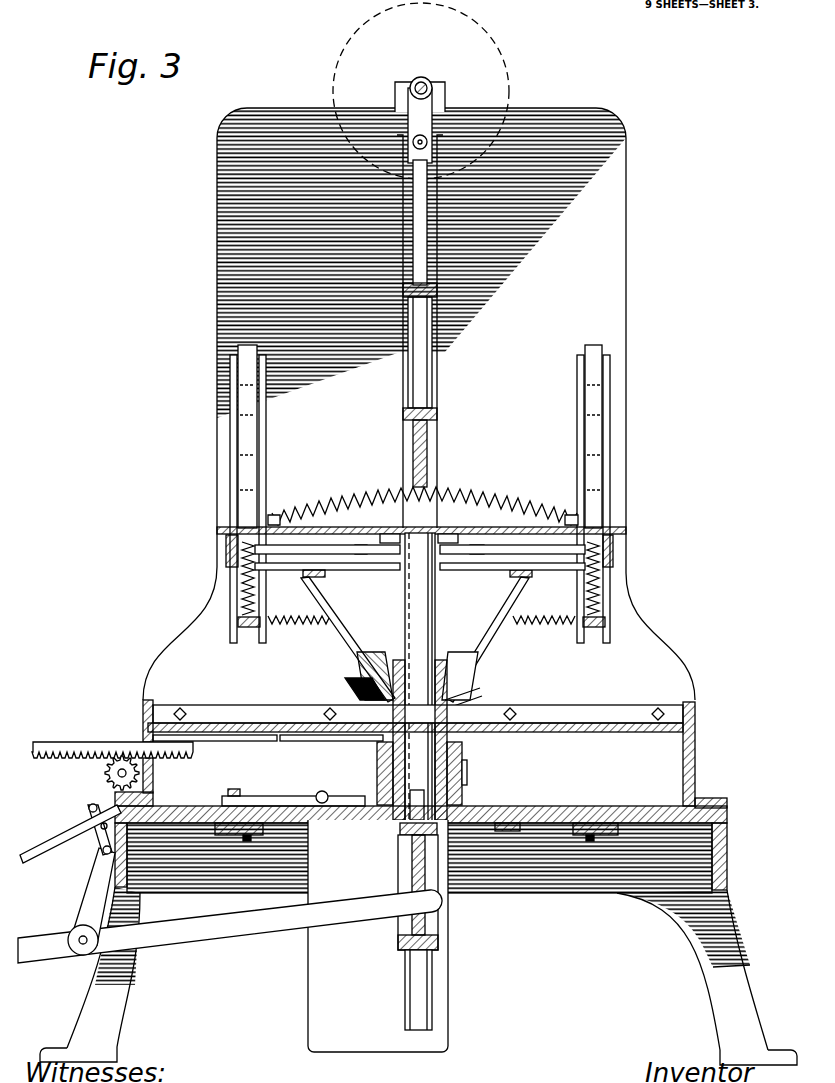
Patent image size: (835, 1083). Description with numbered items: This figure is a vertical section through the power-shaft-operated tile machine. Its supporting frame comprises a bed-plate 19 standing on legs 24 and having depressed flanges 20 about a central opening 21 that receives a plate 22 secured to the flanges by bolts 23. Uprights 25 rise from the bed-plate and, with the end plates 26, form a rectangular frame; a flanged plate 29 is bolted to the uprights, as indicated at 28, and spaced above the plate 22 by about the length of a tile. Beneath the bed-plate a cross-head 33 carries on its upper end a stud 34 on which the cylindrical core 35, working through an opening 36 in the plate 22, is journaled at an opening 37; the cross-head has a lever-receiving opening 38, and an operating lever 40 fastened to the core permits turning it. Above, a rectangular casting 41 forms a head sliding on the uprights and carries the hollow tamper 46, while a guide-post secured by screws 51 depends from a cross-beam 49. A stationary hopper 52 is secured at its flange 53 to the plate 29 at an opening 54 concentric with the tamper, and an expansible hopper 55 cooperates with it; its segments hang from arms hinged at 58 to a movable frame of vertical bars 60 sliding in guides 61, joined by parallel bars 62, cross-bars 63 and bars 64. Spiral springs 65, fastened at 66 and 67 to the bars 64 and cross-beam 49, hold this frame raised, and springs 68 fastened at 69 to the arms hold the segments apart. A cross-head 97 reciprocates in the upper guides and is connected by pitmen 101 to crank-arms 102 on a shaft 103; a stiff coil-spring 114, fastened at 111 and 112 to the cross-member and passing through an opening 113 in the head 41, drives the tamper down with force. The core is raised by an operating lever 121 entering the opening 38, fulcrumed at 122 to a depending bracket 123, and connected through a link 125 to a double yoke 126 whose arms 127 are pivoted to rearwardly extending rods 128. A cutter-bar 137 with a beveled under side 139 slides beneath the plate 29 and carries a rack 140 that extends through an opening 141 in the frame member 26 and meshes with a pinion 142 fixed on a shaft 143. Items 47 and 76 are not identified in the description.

The bed-plate 19 is at (185, 806).
The depressed flanges 20 is at (215, 835).
The central opening 21 is at (238, 806).
The plate 22 is at (345, 825).
The bolts 23 is at (250, 840).
The legs 24 is at (110, 1030).
The uprights 25 is at (419, 351).
The end plates 26 is at (128, 793).
The bolts 28 is at (186, 710).
The flanged plate 29 is at (415, 705).
The cross-head 33 is at (438, 880).
The stud 34 is at (465, 796).
The core 35 is at (462, 758).
The opening 36 is at (511, 835).
The opening 37 is at (467, 780).
The lever-receiving opening 38 is at (438, 920).
The operating lever 40 is at (470, 845).
The casting 41 is at (427, 440).
The tamper 46 is at (446, 660).
The shaft 47 is at (432, 622).
The cross-beam 49 is at (537, 515).
The screws 51 is at (410, 560).
The stationary hopper 52 is at (355, 688).
The flange 53 is at (462, 728).
The opening 54 is at (455, 725).
The expansible hopper 55 is at (365, 655).
The hinge 58 is at (245, 578).
The vertical bars 60 is at (245, 453).
The guides 61 is at (262, 378).
The parallel bars 62 is at (358, 565).
The cross-bars 63 is at (360, 545).
The bars 64 is at (250, 628).
The spiral springs 65 is at (245, 587).
The spring fastening 66 is at (243, 613).
The spring fastening 67 is at (228, 533).
The springs 68 is at (540, 615).
The spring fastening 69 is at (330, 622).
The stop 76 is at (572, 620).
The cross-head 97 is at (438, 292).
The pitmen 101 is at (425, 230).
The crank-arms 102 is at (430, 118).
The shaft 103 is at (428, 82).
The spring fastening 111 is at (280, 516).
The spring fastening 112 is at (578, 517).
The opening 113 is at (428, 487).
The coil-spring 114 is at (328, 505).
The operating lever 121 is at (175, 940).
The fulcrum 122 is at (80, 945).
The bracket 123 is at (100, 915).
The link 125 is at (40, 858).
The double yoke 126 is at (93, 822).
The arms 127 is at (105, 840).
The rods 128 is at (195, 870).
The cutter-bar 137 is at (250, 741).
The beveled under side 139 is at (340, 741).
The rack 140 is at (60, 742).
The opening 141 is at (148, 740).
The pinion 142 is at (108, 778).
The shaft 143 is at (118, 773).